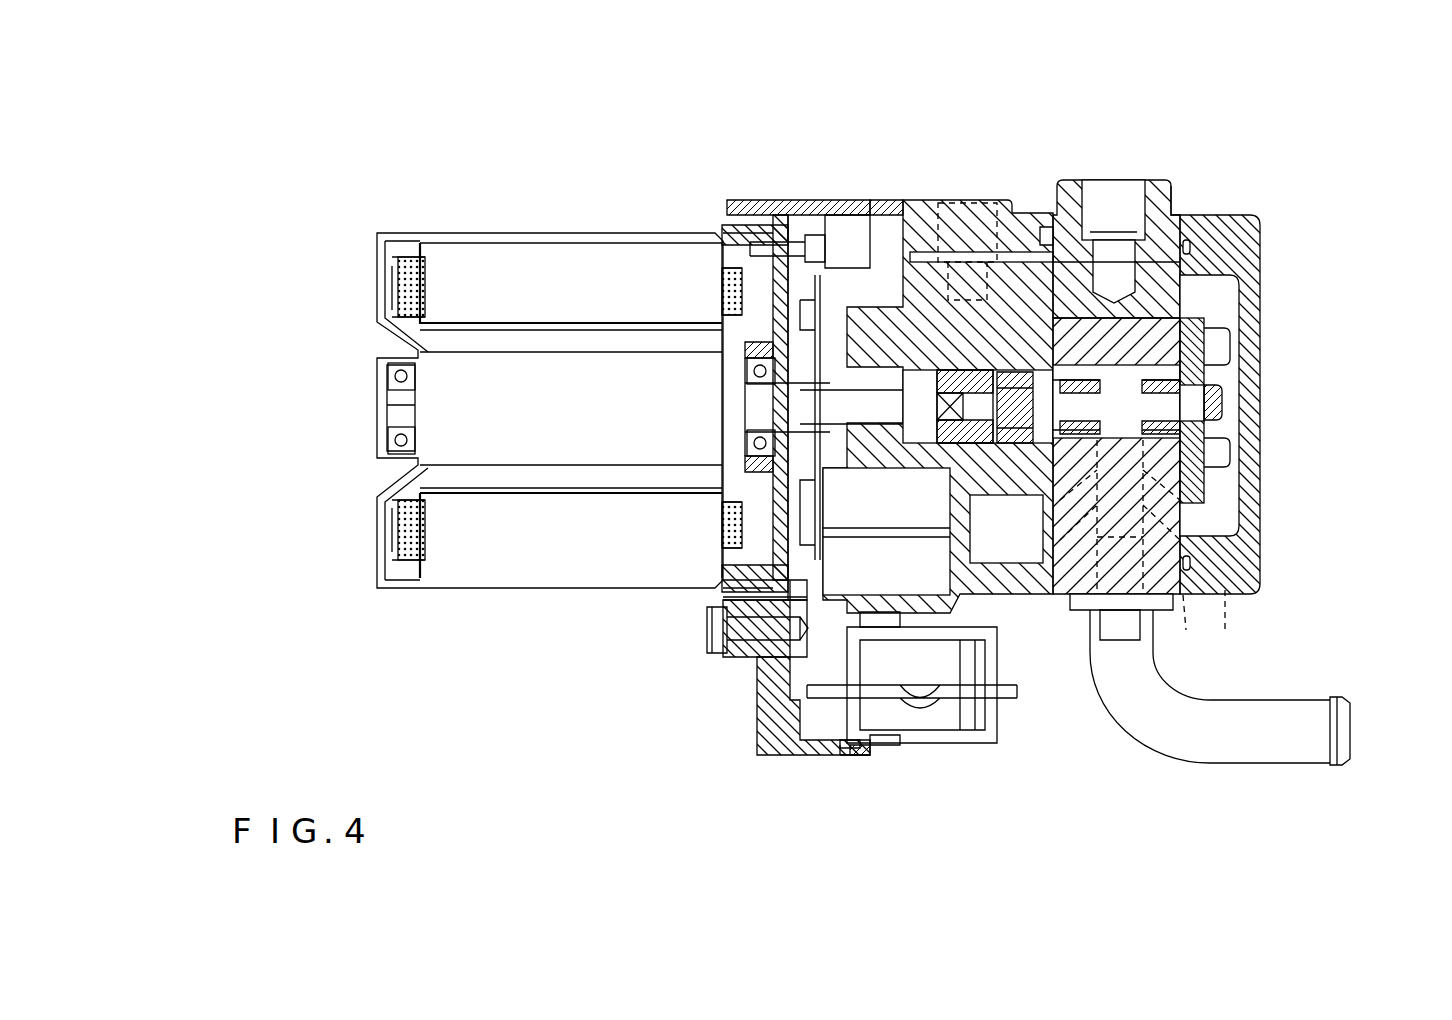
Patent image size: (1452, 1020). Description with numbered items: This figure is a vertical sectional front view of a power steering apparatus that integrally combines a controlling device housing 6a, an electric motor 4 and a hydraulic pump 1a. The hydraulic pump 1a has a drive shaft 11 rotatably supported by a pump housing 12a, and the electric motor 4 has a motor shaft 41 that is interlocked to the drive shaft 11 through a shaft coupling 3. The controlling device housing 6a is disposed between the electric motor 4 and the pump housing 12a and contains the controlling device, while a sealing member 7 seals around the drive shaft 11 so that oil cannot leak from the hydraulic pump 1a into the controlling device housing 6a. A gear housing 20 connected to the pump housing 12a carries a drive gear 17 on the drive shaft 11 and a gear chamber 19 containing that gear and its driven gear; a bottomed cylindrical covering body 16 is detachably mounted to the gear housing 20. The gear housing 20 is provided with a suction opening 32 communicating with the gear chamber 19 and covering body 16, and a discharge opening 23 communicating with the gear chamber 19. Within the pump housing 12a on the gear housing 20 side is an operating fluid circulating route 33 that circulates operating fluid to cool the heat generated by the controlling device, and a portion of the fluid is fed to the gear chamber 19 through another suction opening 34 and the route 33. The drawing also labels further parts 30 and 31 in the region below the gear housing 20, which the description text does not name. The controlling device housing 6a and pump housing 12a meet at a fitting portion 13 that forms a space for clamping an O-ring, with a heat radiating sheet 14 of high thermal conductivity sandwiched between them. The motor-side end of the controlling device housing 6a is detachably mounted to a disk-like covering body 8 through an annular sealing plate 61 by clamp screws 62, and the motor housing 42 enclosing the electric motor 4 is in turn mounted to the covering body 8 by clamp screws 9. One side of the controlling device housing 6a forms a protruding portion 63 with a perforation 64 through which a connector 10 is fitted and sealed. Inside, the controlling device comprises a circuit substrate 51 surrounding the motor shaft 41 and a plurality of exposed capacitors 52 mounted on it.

The hydraulic pump 1a is at (1288, 580).
The shaft coupling 3 is at (1020, 222).
The electric motor 4 is at (543, 624).
The controlling device housing 6a is at (852, 200).
The sealing member 7 is at (1030, 246).
The covering body 8 is at (778, 200).
The clamp screws 9 is at (706, 642).
The connector 10 is at (985, 750).
The drive shaft 11 is at (1080, 262).
The pump housing 12a is at (922, 200).
The fitting portion 13 is at (890, 200).
The sheet 14 is at (907, 212).
The covering body 16 is at (1262, 462).
The drive gear 17 is at (1132, 407).
The gear chamber 19 is at (1196, 298).
The gear housing 20 is at (1178, 195).
The discharge opening 23 is at (1105, 182).
The pump body 30 is at (1153, 414).
The pipe 31 is at (1165, 611).
The suction opening 32 is at (1352, 752).
The operating fluid circulating route 33 is at (1030, 552).
The another suction opening 34 is at (962, 232).
The motor shaft 41 is at (830, 406).
The motor housing 42 is at (486, 592).
The circuit substrate 51 is at (722, 592).
The capacitors 52 is at (1010, 640).
The annular sealing plate 61 is at (793, 202).
The clamp screws 62 is at (782, 200).
The protruding portion 63 is at (830, 792).
The perforation 64 is at (880, 745).